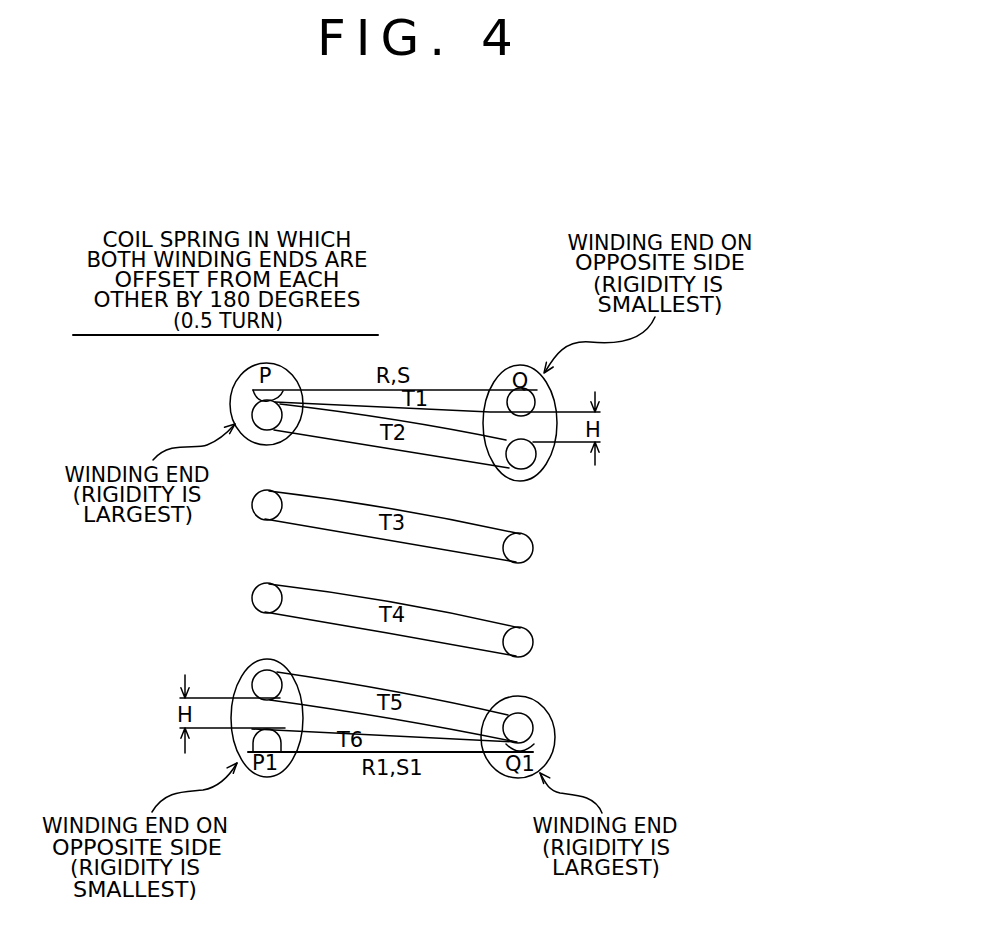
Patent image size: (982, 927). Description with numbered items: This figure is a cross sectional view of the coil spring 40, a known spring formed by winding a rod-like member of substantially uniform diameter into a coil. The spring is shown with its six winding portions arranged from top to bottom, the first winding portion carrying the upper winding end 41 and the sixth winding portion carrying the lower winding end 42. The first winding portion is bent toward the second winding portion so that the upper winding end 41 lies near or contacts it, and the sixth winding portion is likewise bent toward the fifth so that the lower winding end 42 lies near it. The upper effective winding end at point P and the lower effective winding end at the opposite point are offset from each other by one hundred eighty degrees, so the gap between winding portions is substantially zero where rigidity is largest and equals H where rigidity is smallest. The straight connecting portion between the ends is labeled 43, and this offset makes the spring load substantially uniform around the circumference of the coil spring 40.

The coil spring 40 is at (545, 545).
The upper winding end 41 is at (263, 393).
The lower winding end 42 is at (550, 742).
The straight line portion connecting winding ends 43 is at (441, 389).